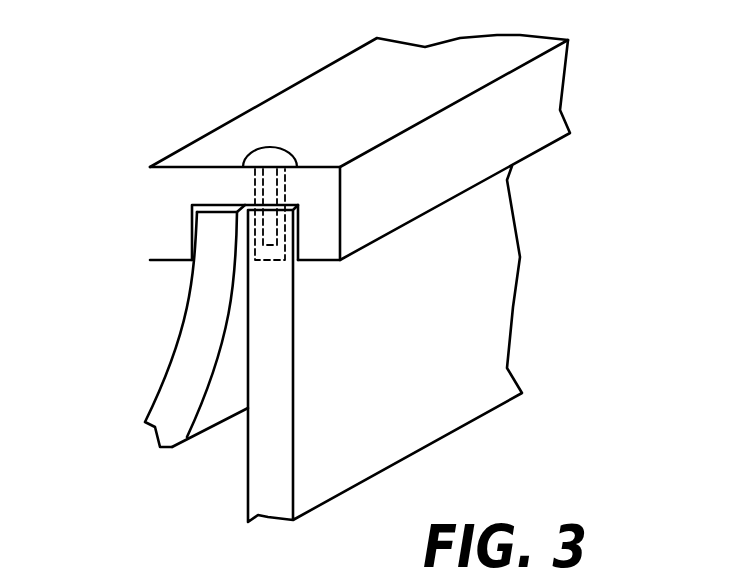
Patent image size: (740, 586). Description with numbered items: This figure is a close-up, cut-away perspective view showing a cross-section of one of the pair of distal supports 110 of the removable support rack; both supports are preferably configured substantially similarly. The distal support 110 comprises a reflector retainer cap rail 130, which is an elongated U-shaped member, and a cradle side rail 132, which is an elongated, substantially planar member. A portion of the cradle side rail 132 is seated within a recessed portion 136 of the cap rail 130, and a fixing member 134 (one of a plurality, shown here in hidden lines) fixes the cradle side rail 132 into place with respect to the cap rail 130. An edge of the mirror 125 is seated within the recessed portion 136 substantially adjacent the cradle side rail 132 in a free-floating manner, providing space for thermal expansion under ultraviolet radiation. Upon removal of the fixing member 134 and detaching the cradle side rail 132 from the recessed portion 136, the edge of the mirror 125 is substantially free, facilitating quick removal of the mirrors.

The distal support 110 is at (258, 62).
The mirror 125 is at (193, 372).
The reflector retainer cap rail 130 is at (522, 127).
The cradle side rail 132 is at (455, 408).
The fixing member 134 is at (267, 155).
The recessed portion 136 is at (220, 212).